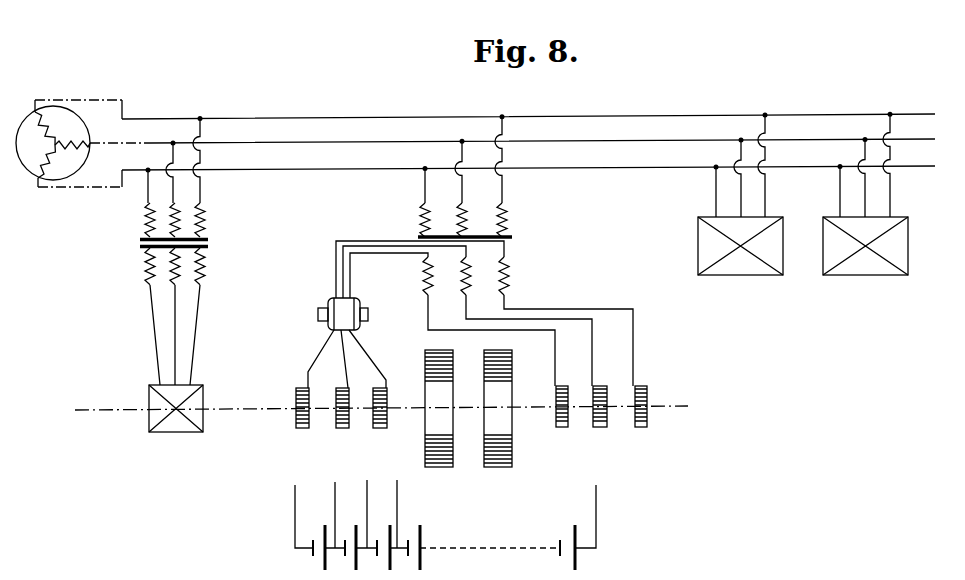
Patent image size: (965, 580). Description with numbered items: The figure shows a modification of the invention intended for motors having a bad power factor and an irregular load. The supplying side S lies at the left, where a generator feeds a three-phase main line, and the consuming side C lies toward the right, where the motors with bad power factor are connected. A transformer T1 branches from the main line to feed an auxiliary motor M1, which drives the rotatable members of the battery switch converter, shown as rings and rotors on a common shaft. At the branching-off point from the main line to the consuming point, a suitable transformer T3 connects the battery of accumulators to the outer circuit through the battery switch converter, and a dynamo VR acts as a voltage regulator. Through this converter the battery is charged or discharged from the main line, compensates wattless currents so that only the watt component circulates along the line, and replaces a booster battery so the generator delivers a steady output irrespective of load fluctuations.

The supplying side S is at (528, 114).
The consuming side C is at (528, 179).
The transformer T1 is at (188, 200).
The transformer T3 is at (480, 204).
The dynamo acting as a voltage regulator VR is at (334, 307).
The auxiliary motor M1 is at (190, 418).